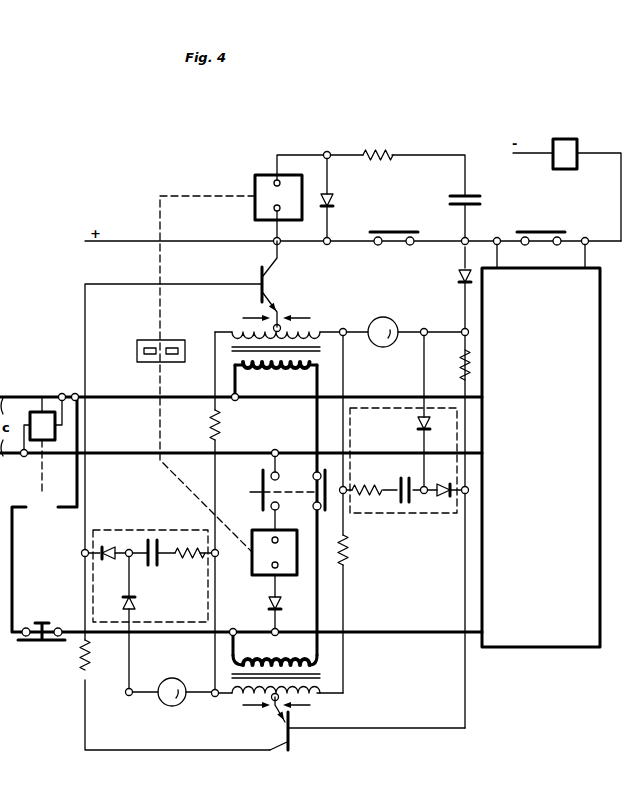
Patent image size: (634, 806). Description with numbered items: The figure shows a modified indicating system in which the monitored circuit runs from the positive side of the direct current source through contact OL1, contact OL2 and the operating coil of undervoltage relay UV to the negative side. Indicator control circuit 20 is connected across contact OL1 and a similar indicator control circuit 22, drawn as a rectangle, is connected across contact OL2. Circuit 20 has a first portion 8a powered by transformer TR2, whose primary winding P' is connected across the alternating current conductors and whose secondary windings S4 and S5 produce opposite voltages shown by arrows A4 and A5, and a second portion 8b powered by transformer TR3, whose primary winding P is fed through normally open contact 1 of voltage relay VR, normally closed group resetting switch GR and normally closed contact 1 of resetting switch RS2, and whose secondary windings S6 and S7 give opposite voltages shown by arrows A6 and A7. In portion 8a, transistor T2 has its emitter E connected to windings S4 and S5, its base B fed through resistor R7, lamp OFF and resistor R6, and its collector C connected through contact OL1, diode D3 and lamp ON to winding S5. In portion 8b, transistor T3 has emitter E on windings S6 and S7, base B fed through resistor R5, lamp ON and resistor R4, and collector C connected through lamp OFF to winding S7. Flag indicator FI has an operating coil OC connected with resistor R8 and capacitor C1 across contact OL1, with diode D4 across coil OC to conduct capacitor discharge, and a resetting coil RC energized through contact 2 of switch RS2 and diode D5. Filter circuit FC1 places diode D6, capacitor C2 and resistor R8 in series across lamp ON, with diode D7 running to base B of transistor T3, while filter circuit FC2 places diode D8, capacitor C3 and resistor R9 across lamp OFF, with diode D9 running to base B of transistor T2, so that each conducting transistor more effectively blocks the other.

The operating coil OC is at (255, 185).
The resistor R8 is at (368, 152).
The diode D4 is at (333, 200).
The capacitor C1 is at (447, 200).
The undervoltage relay UV is at (575, 152).
The contact OL1 is at (396, 247).
The contact OL2 is at (552, 247).
The diode D3 is at (457, 277).
The first portion of indicator control circuit 8a is at (375, 291).
The on lamp ON is at (383, 322).
The resistor R4 is at (456, 366).
The flag indicator FI is at (138, 348).
The voltage relay VR is at (43, 398).
The resistor R7 is at (207, 424).
The first transformer TR2 is at (323, 354).
The primary winding P' is at (269, 381).
The transistor T2 is at (258, 295).
The collector C is at (274, 505).
The base B is at (273, 494).
The emitter E is at (275, 505).
The secondary winding S4 is at (240, 334).
The secondary winding S5 is at (312, 330).
The arrow A4 is at (251, 310).
The arrow A5 is at (299, 316).
The indicator control circuit 20 is at (270, 421).
The filter circuit FC1 is at (398, 513).
The diode D6 is at (418, 424).
The capacitor C2 is at (398, 484).
The diode D7 is at (442, 486).
The resetting switch RS2 is at (262, 484).
The contact 2 is at (290, 503).
The contact 1 is at (312, 480).
The resetting coil RC is at (252, 564).
The diode D5 is at (266, 604).
The resistor R5 is at (348, 553).
The second portion of indicator control circuit 8b is at (416, 588).
The filter circuit FC2 is at (162, 530).
The diode D9 is at (108, 562).
The capacitor C3 is at (148, 562).
The resistor R9 is at (190, 562).
The diode D8 is at (140, 603).
The group resetting switch GR is at (46, 626).
The resistor R6 is at (90, 663).
The off lamp OFF is at (171, 684).
The second transformer TR3 is at (323, 678).
The primary winding P is at (264, 645).
The transistor T3 is at (272, 732).
The secondary winding S7 is at (234, 695).
The secondary winding S6 is at (322, 694).
The arrow A7 is at (244, 710).
The arrow A6 is at (308, 706).
The indicator control circuit 22 is at (559, 644).